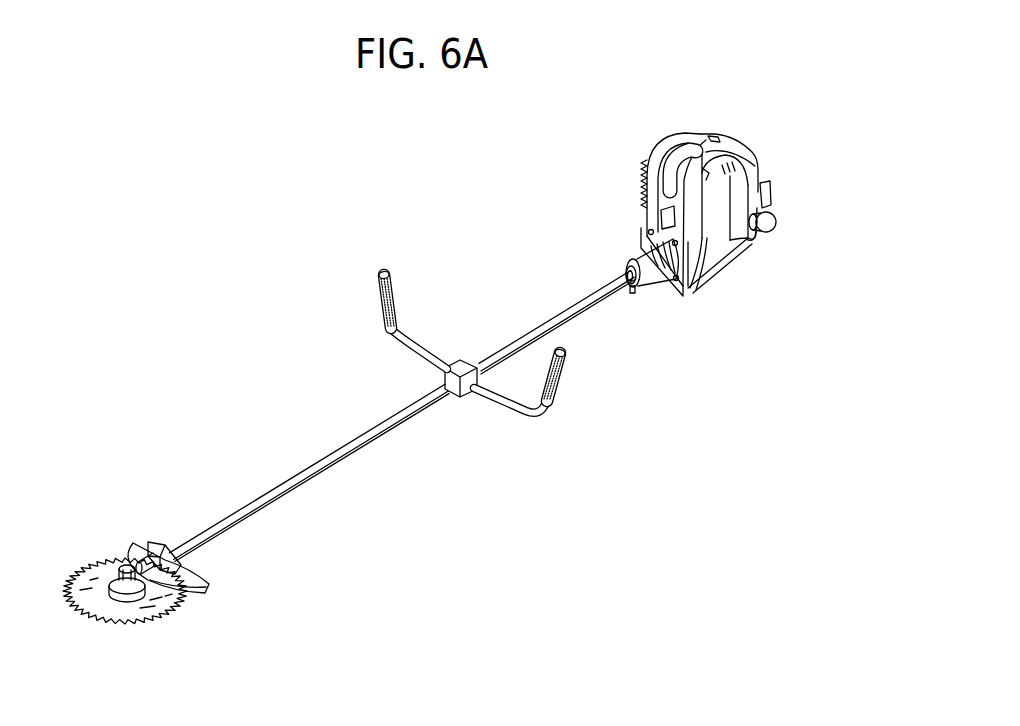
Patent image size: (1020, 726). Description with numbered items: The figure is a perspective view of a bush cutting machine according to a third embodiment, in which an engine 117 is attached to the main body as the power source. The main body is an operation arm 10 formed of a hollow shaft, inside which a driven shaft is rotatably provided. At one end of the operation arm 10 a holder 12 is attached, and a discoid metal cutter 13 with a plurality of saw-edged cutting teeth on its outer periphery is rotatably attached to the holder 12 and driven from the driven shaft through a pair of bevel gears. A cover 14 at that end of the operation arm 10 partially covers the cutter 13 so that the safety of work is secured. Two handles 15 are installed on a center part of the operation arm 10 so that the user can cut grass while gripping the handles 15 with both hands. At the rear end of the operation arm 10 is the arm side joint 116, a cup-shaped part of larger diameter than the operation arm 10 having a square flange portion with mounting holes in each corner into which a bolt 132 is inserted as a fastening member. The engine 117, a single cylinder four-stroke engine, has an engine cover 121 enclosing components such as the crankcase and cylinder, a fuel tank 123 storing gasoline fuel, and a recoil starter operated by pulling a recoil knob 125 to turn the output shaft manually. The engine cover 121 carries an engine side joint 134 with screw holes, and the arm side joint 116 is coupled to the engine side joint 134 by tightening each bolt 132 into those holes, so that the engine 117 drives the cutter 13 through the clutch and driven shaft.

The operation arm 10 is at (303, 471).
The holder 12 is at (127, 565).
The metal cutter 13 is at (132, 609).
The cover 14 is at (208, 583).
The handles 15 is at (379, 297).
The arm side joint 116 is at (632, 252).
The engine 117 is at (758, 157).
The engine cover 121 is at (684, 154).
The fuel tank 123 is at (727, 262).
The recoil knob 125 is at (771, 196).
The bolt 132 is at (648, 230).
The engine side joint 134 is at (686, 292).